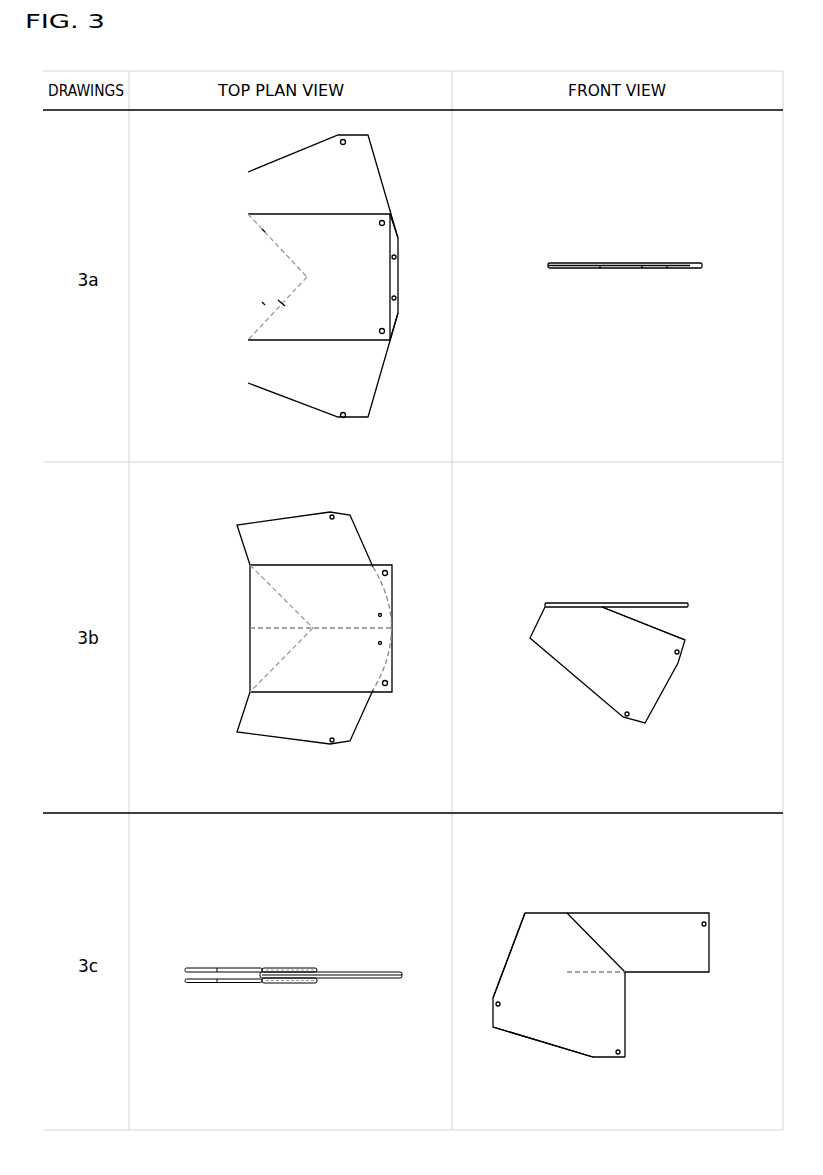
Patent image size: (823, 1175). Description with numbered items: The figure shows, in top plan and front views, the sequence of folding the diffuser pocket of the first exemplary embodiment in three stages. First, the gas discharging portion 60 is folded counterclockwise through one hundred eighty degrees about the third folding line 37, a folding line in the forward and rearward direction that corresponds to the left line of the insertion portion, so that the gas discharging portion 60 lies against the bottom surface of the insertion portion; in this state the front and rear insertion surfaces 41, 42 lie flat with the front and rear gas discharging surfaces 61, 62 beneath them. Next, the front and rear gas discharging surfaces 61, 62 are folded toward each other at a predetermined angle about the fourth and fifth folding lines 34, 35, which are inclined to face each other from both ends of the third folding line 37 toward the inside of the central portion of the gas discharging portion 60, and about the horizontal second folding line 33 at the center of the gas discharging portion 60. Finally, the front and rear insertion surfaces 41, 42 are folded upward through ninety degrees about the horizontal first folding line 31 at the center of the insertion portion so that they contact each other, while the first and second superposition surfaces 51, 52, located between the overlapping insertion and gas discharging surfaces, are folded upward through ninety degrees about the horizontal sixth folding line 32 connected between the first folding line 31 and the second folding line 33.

The first folding line 31 is at (683, 972).
The sixth folding line 32 is at (605, 973).
The second folding line 33 is at (625, 1043).
The fourth folding line 34 is at (604, 952).
The fifth folding line 35 is at (277, 593).
The third folding line 37 is at (568, 948).
The front insertion surface 41 is at (340, 978).
The rear insertion surface 42 is at (340, 972).
The first superposition surface 51 is at (283, 1020).
The second superposition surface 52 is at (283, 968).
The gas discharging portion 60 is at (539, 961).
The front gas discharging surface 61 is at (238, 983).
The rear gas discharging surface 62 is at (238, 968).